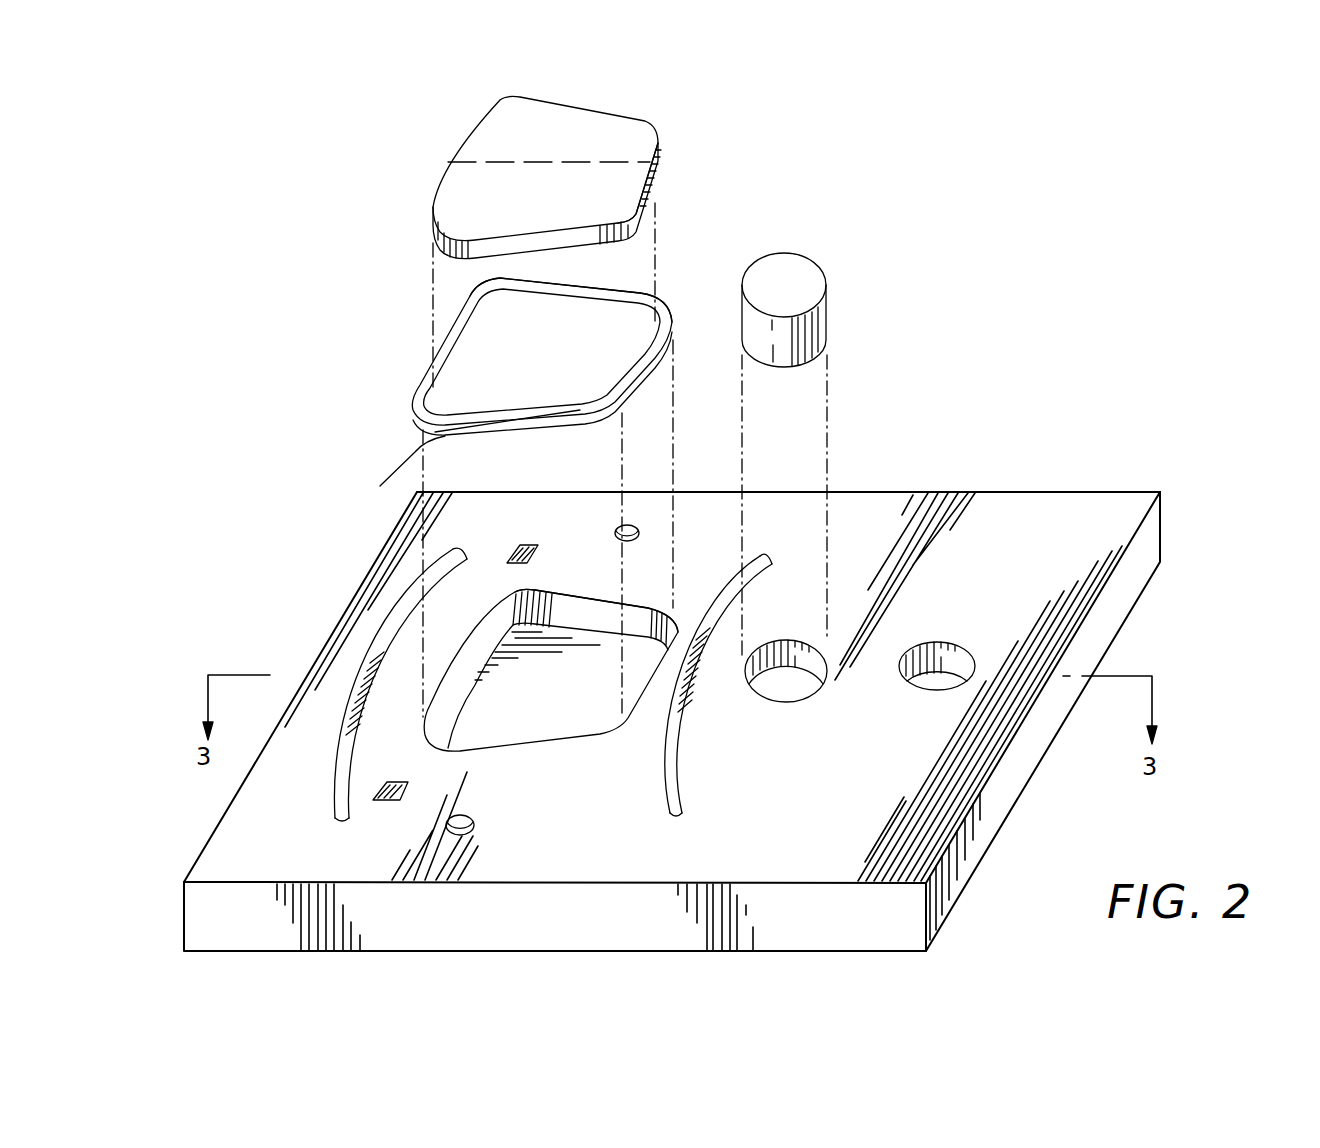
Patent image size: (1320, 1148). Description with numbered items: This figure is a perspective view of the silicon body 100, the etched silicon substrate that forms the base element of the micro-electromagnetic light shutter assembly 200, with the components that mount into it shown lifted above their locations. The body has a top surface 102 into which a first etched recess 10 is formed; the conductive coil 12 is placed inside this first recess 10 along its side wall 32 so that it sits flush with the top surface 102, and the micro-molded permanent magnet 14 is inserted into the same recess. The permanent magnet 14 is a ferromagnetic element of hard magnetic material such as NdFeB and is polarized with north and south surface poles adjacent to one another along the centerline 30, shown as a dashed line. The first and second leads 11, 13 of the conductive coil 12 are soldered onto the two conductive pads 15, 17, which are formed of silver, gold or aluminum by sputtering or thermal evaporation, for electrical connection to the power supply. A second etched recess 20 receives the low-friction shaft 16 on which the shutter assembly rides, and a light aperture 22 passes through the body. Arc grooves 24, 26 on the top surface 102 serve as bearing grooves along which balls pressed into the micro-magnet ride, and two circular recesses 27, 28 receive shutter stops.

The first etched recess 10 is at (547, 718).
The first lead 11 is at (475, 297).
The conductive coil 12 is at (428, 370).
The second lead 13 is at (390, 474).
The micro-molded permanent magnet 14 is at (615, 135).
The conductive pad 15 is at (520, 542).
The shaft 16 is at (800, 334).
The conductive pad 17 is at (390, 802).
The second etched recess 20 is at (790, 703).
The light aperture 22 is at (950, 645).
The arc groove 24 is at (345, 770).
The arc groove 26 is at (728, 595).
The circular recess 27 is at (618, 522).
The circular recess 28 is at (468, 817).
The centerline 30 is at (602, 167).
The side wall 32 is at (596, 600).
The silicon body 100 is at (1143, 551).
The top surface 102 is at (1100, 508).
The shutter assembly 200 is at (1083, 377).